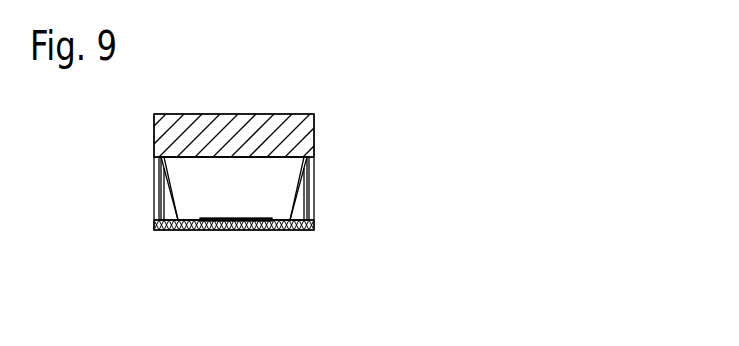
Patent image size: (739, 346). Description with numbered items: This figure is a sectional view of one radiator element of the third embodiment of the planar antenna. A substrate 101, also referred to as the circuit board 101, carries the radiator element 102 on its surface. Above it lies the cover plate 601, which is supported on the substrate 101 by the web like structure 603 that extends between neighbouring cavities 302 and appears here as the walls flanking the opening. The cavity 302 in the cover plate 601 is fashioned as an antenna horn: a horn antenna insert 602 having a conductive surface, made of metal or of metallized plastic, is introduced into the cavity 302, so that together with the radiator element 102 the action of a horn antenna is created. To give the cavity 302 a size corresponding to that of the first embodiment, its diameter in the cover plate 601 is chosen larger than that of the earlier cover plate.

The substrate 101 is at (285, 230).
The radiator element 102 is at (214, 226).
The cavity 302 is at (252, 172).
The cover plate 601 is at (198, 133).
The horn antenna insert 602 is at (315, 190).
The web like structure 603 is at (155, 202).